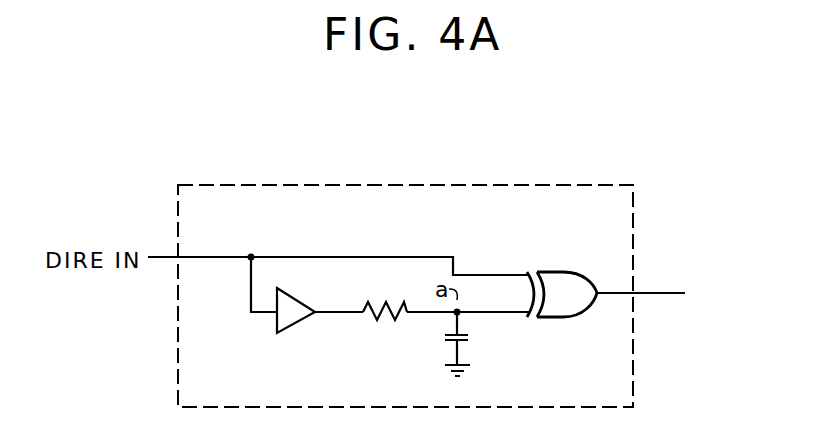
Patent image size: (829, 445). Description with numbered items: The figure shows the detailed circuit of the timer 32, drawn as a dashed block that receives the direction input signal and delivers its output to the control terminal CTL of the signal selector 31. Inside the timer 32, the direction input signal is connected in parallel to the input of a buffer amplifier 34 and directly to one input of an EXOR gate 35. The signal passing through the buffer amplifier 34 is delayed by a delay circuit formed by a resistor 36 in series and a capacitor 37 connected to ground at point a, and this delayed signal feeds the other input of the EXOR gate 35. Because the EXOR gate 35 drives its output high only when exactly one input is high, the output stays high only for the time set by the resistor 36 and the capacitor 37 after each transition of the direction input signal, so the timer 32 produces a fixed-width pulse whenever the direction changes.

The signal selector 31 is at (677, 305).
The timer 32 is at (533, 184).
The buffer amplifier 34 is at (268, 322).
The EXOR gate 35 is at (563, 271).
The resistor 36 is at (393, 322).
The capacitor 37 is at (470, 338).